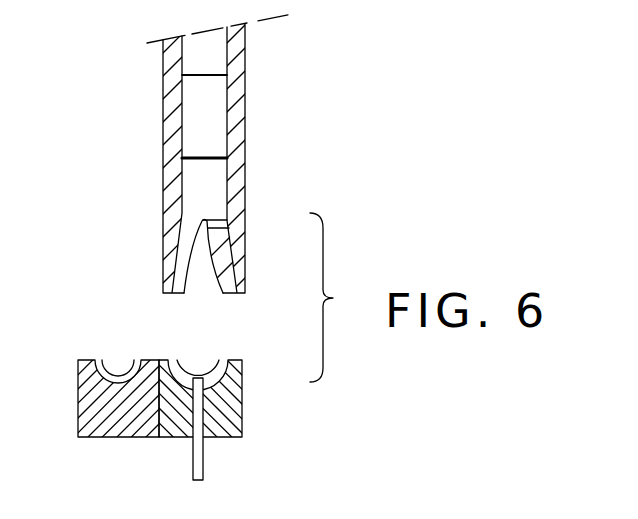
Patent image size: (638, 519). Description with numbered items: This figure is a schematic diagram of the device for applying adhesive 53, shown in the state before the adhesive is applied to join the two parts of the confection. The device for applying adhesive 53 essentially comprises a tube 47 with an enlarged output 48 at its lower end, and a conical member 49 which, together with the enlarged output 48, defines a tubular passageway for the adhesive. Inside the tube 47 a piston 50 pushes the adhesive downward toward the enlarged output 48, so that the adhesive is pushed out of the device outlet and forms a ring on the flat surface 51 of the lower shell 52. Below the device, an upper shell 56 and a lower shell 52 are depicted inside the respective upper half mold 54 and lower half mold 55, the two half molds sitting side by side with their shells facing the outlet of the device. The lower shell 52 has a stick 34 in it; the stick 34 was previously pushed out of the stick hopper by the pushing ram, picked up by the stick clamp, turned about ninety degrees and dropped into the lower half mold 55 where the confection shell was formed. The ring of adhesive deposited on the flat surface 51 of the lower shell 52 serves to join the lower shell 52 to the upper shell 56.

The stick 34 is at (204, 468).
The tube 47 is at (165, 86).
The enlarged output 48 is at (244, 284).
The conical member 49 is at (220, 258).
The piston 50 is at (214, 116).
The flat surface 51 is at (223, 375).
The lower shell 52 is at (220, 373).
The device for applying adhesive 53 is at (147, 157).
The upper half mold 54 is at (117, 430).
The lower half mold 55 is at (240, 418).
The upper shell 56 is at (112, 372).